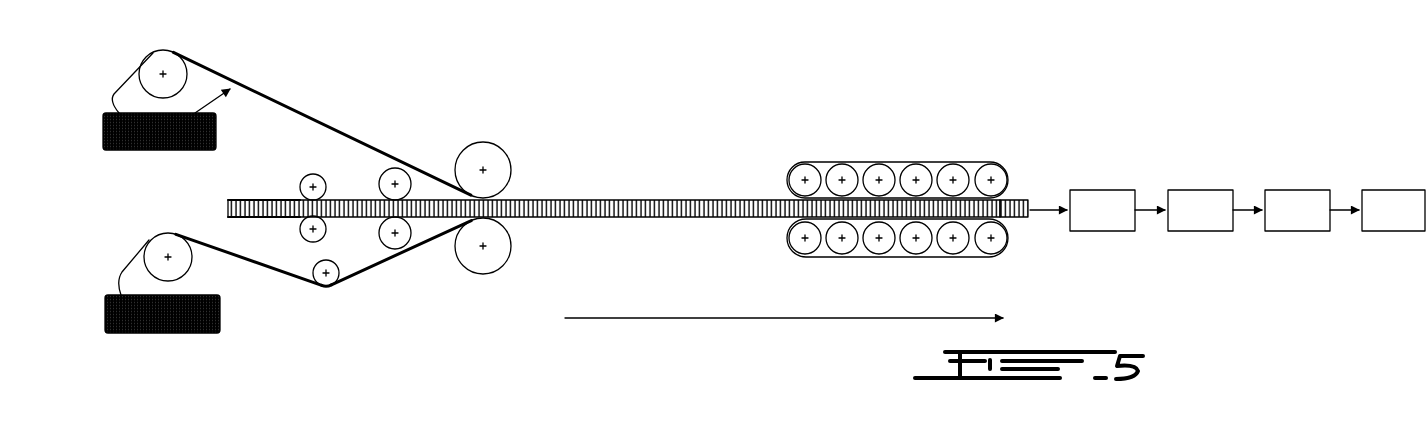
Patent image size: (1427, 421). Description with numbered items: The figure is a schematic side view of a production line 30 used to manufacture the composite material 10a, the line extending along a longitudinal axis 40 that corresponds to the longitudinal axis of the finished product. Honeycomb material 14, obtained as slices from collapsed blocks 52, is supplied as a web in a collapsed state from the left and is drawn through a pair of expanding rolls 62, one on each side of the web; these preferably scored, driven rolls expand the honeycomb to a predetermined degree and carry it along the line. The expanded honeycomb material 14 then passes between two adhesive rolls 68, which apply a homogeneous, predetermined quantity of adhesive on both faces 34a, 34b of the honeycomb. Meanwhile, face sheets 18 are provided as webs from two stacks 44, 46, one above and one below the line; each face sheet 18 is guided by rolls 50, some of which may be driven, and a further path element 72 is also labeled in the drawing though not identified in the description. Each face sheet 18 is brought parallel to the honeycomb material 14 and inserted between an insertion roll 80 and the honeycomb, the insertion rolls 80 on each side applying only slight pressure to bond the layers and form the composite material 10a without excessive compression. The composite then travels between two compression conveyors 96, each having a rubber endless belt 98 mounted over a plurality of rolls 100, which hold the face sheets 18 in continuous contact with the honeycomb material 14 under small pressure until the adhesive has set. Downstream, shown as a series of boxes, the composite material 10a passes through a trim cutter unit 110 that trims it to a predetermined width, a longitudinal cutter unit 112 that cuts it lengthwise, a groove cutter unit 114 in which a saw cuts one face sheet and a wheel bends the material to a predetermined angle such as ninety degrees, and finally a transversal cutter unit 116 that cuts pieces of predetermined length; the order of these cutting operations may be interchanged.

The composite material 10a is at (1018, 199).
The honeycomb material 14 is at (228, 208).
The face sheet 18 is at (277, 100).
The production line 30 is at (950, 202).
The face 34a is at (265, 200).
The face 34b is at (241, 217).
The longitudinal axis 40 is at (740, 319).
The stack 44 is at (220, 128).
The stack 46 is at (224, 314).
The roll 50 is at (175, 74).
The collapsed block 52 is at (238, 200).
The expanding roll 62 is at (315, 174).
The adhesive roll 68 is at (392, 168).
The strand path 72 is at (150, 150).
The insertion roll 80 is at (507, 147).
The compression conveyor 96 is at (897, 210).
The rubber endless belt 98 is at (897, 210).
The roll 100 is at (803, 169).
The trim cutter unit 110 is at (1115, 190).
The longitudinal cutter unit 112 is at (1213, 190).
The groove cutter unit 114 is at (1312, 190).
The transversal cutter unit 116 is at (1410, 190).